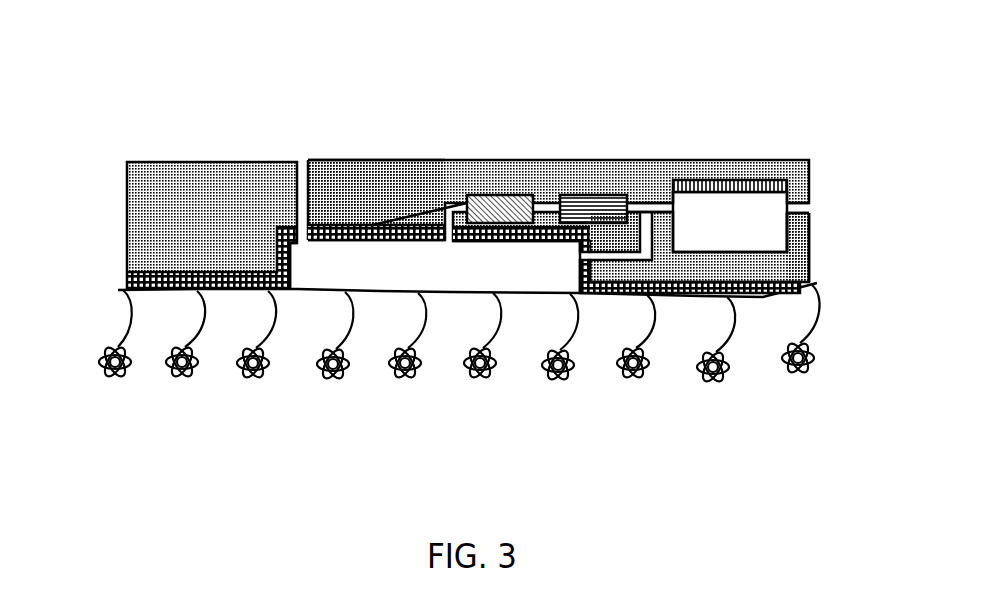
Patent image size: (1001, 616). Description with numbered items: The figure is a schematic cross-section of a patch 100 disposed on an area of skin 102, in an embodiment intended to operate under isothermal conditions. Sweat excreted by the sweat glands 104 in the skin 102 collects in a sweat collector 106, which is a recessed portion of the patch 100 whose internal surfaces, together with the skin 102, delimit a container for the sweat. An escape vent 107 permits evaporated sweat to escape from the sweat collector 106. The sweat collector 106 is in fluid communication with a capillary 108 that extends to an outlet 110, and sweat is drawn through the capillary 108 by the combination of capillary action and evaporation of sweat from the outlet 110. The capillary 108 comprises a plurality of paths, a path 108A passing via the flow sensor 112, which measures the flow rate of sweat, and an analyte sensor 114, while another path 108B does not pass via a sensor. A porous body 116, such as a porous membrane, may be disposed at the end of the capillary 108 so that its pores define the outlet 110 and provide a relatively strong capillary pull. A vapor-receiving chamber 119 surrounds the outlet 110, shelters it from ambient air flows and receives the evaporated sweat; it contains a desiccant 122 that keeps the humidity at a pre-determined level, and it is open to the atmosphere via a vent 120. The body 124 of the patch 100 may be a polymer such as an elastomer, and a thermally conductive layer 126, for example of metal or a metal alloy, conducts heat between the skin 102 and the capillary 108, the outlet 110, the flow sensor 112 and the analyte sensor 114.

The patch 100 is at (140, 70).
The skin 102 is at (675, 293).
The sweat glands 104 is at (187, 372).
The sweat collector 106 is at (517, 267).
The escape vent 107 is at (304, 173).
The capillary 108 is at (445, 222).
The path 108A is at (598, 207).
The path 108B is at (598, 255).
The outlet 110 is at (675, 209).
The flow sensor 112 is at (587, 195).
The analyte sensor 114 is at (512, 205).
The porous body 116 is at (672, 208).
The vapor-receiving chamber 119 is at (770, 237).
The vent 120 is at (805, 208).
The desiccant 122 is at (773, 185).
The body 124 is at (187, 195).
The thermally conductive layer 126 is at (397, 225).